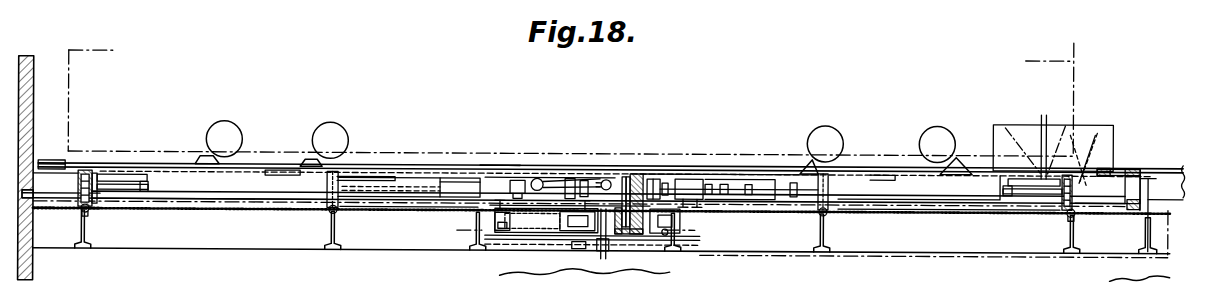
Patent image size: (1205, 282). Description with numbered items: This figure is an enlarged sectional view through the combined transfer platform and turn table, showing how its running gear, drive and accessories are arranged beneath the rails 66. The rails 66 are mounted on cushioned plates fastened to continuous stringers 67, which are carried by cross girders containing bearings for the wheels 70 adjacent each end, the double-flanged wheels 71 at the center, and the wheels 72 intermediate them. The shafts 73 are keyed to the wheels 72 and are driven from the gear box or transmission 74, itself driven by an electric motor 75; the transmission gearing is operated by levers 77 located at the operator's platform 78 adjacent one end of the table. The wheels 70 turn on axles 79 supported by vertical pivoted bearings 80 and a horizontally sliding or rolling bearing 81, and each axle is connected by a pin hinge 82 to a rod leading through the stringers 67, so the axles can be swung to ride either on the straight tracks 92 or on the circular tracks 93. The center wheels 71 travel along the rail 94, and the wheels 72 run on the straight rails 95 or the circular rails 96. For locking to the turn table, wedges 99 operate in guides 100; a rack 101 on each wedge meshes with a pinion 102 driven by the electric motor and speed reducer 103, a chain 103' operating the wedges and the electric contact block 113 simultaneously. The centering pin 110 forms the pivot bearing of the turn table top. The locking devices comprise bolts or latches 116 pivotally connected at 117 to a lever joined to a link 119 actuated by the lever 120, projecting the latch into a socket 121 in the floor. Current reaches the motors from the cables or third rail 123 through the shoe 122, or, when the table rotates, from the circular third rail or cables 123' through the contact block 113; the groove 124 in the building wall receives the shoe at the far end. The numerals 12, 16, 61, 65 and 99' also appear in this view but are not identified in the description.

The base frame 12 is at (457, 246).
The carriage track 16 is at (73, 218).
The left housing 61 is at (243, 212).
The upper rail 65 is at (495, 172).
The rails 66 is at (756, 174).
The stringers 67 is at (919, 187).
The wheels 70 is at (93, 205).
The wheels 71 is at (573, 177).
The wheels 72 is at (325, 207).
The shafts 73 is at (462, 190).
The gear box or transmission 74 is at (690, 178).
The electric motor 75 is at (656, 178).
The levers 77 is at (1040, 132).
The operator's platform 78 is at (1012, 160).
The axles 79 is at (118, 190).
The vertical pivoted bearings 80 is at (80, 182).
The horizontally sliding or rolling bearing 81 is at (95, 186).
The pin hinge 82 is at (150, 190).
The straight tracks 92 is at (87, 213).
The circular tracks 93 is at (868, 207).
The rail 94 is at (570, 208).
The straight rails 95 is at (337, 213).
The circular rails 96 is at (418, 209).
The wedges 99 is at (673, 239).
The gear box 99' is at (545, 237).
The guides 100 is at (636, 176).
The rack 101 is at (626, 176).
The pinion 102 is at (611, 181).
The electric motor and speed reducer 103 is at (533, 171).
The chain 103' is at (565, 172).
The centering pin 110 is at (572, 246).
The electric contact block 113 is at (598, 232).
The bolts or latches 116 is at (1128, 168).
The pivotal connection 117 is at (1108, 168).
The link 119 is at (1101, 204).
The lever 120 is at (1083, 159).
The socket 121 is at (1139, 168).
The shoe 122 is at (1128, 207).
The cables or third rail 123 is at (1120, 214).
The circular third rail or cables 123' is at (519, 238).
The groove 124 is at (39, 209).